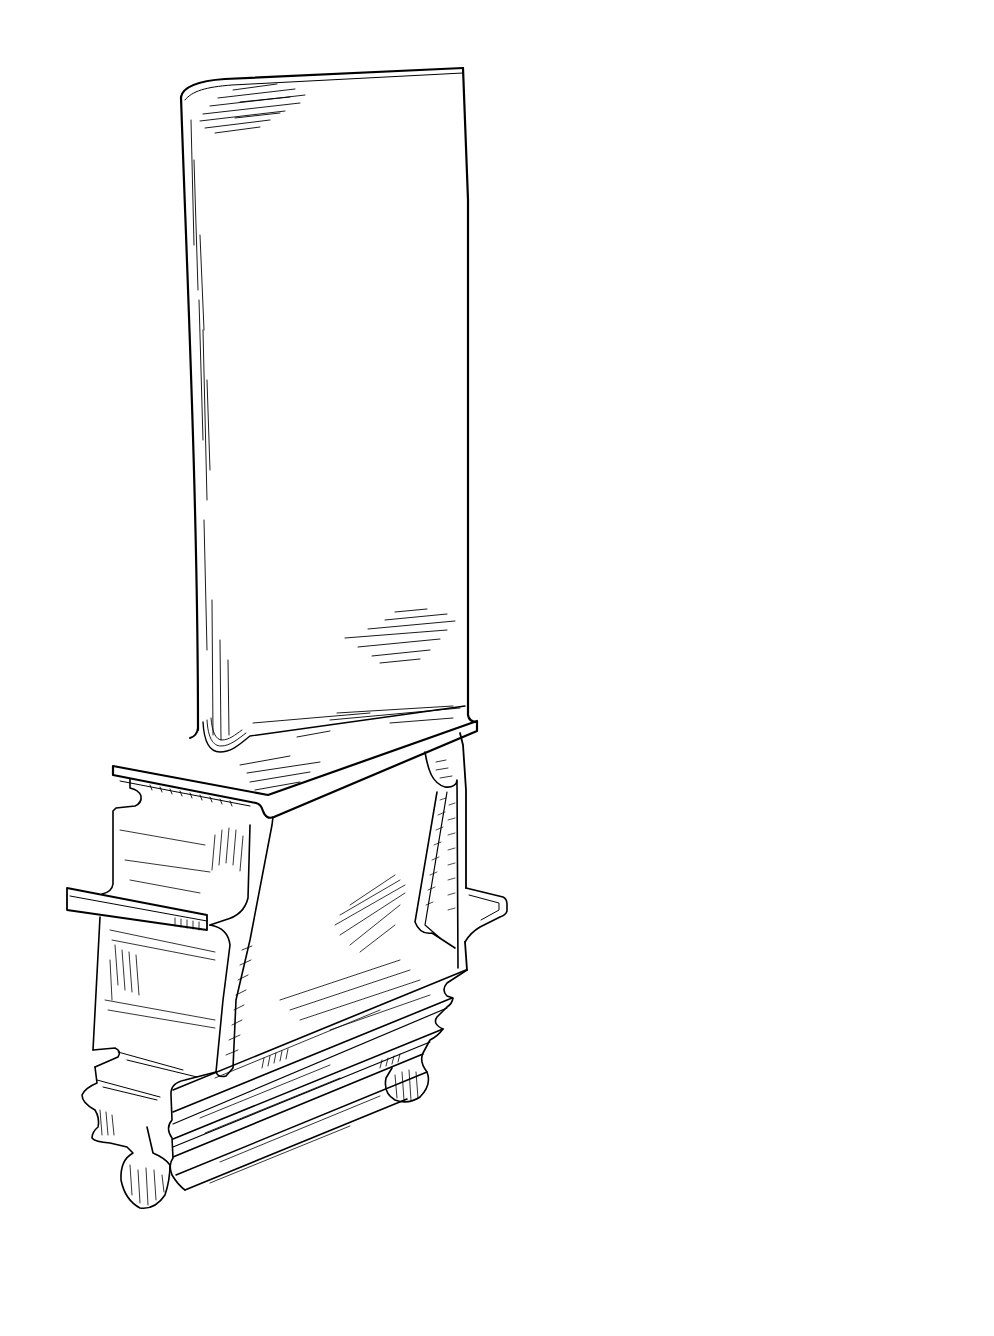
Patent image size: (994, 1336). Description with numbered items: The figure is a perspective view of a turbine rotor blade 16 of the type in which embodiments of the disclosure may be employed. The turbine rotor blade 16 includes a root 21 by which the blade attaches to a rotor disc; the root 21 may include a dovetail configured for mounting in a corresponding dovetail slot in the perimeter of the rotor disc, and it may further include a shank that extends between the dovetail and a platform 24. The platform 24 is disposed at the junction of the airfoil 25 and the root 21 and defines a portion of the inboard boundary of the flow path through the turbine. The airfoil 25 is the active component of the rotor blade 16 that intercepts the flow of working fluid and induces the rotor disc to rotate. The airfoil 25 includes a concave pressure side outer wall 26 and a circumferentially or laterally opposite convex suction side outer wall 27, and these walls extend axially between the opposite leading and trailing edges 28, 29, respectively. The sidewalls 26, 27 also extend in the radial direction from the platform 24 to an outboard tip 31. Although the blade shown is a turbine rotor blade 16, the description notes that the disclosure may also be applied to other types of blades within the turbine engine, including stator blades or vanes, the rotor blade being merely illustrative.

The turbine rotor blade 16 is at (588, 63).
The root 21 is at (503, 1007).
The platform 24 is at (192, 784).
The airfoil 25 is at (530, 251).
The pressure side outer wall 26 is at (352, 470).
The suction side outer wall 27 is at (490, 525).
The leading edge 28 is at (191, 381).
The trailing edge 29 is at (470, 412).
The outboard tip 31 is at (262, 78).